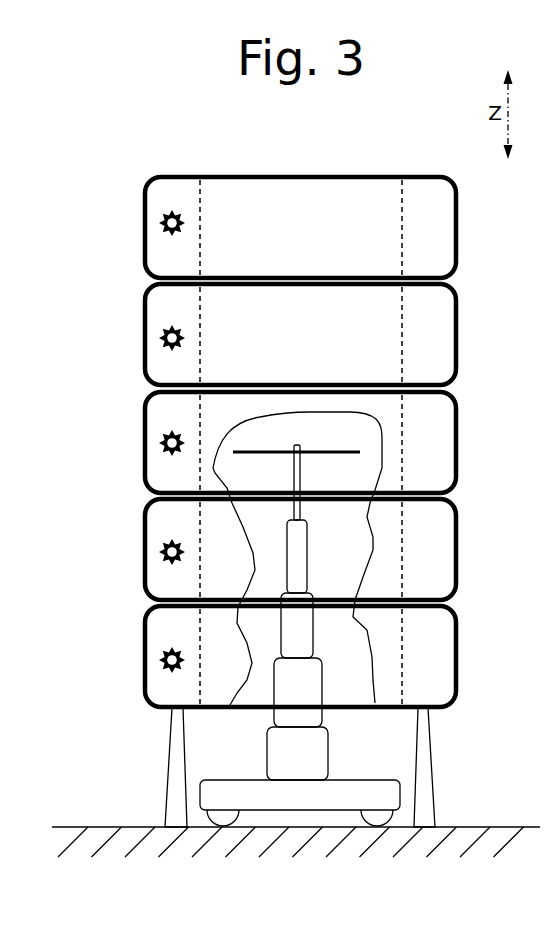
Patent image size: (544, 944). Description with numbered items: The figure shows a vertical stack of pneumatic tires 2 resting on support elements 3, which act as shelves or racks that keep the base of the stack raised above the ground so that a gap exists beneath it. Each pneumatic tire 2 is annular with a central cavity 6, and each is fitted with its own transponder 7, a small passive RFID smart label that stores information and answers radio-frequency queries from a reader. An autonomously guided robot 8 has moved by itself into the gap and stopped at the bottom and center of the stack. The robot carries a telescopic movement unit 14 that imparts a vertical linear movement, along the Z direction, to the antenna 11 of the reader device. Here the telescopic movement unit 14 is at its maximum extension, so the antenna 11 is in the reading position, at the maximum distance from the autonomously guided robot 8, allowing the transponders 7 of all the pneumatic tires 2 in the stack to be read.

The pneumatic tire 2 is at (435, 231).
The support element 3 is at (461, 783).
The central cavity 6 is at (208, 219).
The transponder 7 is at (172, 211).
The autonomously guided robot 8 is at (209, 758).
The antenna 11 is at (327, 428).
The telescopic movement unit 14 is at (352, 722).